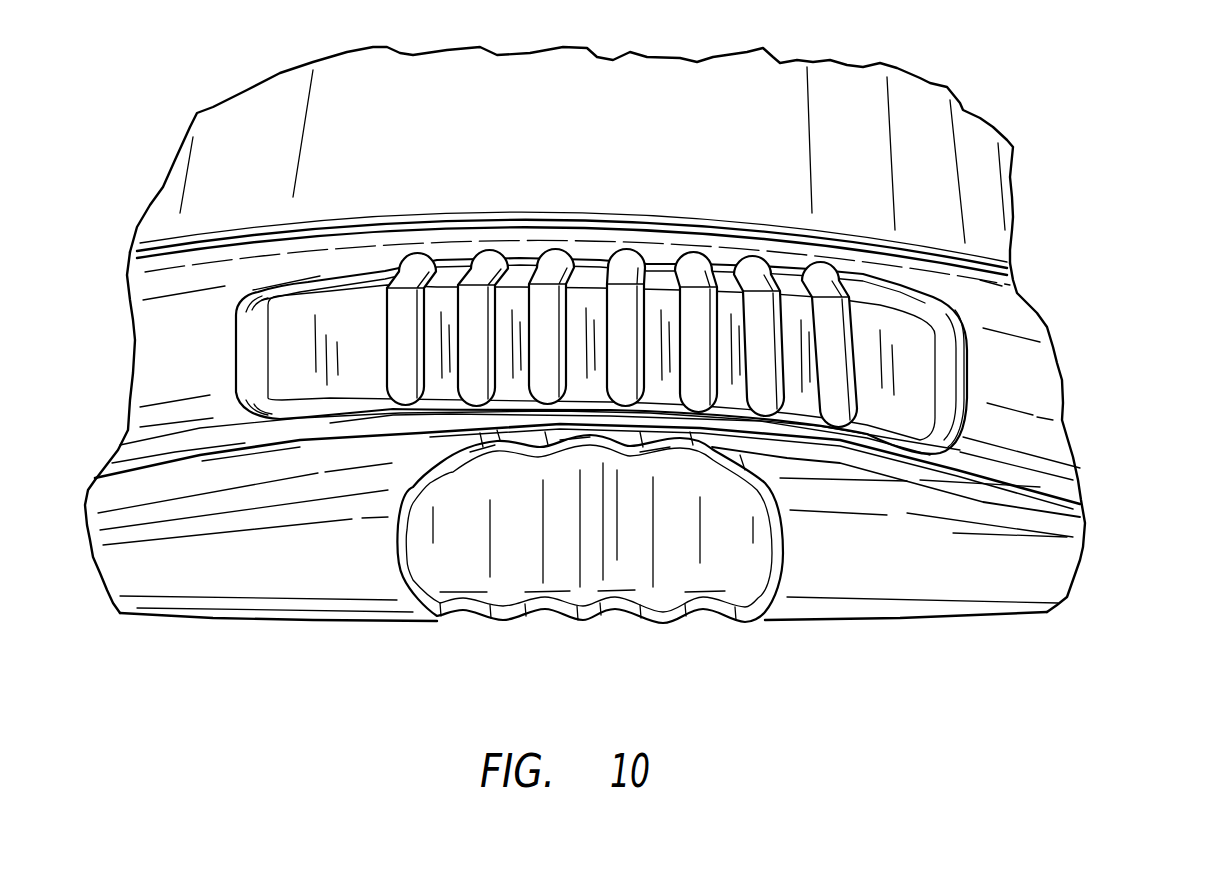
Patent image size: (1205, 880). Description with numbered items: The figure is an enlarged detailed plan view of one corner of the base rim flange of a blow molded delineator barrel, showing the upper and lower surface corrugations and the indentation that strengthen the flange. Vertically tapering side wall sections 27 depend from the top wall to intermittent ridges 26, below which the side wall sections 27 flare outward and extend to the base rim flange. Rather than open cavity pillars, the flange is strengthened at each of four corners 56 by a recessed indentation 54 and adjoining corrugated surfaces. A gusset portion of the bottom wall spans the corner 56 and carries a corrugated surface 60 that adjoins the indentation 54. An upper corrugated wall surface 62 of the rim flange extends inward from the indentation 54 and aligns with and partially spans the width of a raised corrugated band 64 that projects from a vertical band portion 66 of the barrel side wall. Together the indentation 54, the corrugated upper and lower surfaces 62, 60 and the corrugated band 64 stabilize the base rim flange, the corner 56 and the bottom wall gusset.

The side wall sections 27 is at (1005, 157).
The intermittent ridges 26 is at (1002, 277).
The raised corrugated band 64 is at (850, 320).
The vertical band portion 66 is at (1047, 367).
The corner 56 is at (910, 618).
The recessed indentation 54 is at (508, 567).
The upper corrugated wall surface 62 is at (552, 445).
The corrugated surface 60 is at (652, 627).